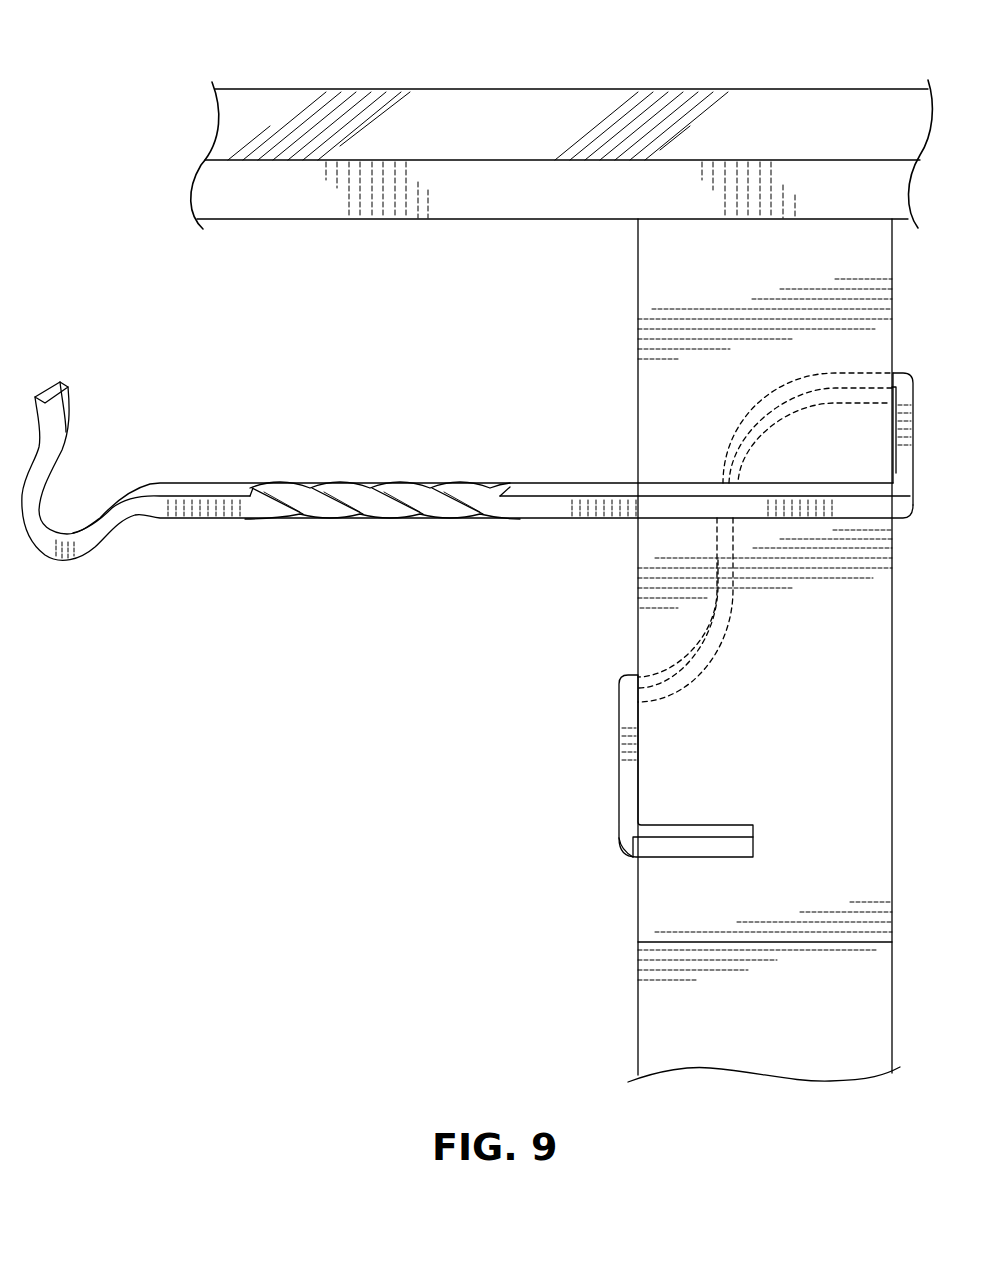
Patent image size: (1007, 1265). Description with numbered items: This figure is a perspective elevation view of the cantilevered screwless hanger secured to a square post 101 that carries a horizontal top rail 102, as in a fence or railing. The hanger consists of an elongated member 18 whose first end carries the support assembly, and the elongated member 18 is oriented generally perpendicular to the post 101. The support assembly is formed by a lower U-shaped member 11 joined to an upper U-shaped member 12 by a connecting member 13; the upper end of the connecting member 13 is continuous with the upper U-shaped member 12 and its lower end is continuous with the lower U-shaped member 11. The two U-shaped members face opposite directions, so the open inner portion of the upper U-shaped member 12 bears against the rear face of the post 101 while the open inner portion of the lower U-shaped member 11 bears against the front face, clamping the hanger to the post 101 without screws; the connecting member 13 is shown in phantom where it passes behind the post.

The horizontal top rail 102 is at (824, 122).
The post 101 is at (660, 416).
The elongated member 18 is at (388, 513).
The connecting member 13 is at (852, 372).
The upper U-shaped member 12 is at (908, 468).
The lower U-shaped member 11 is at (636, 758).